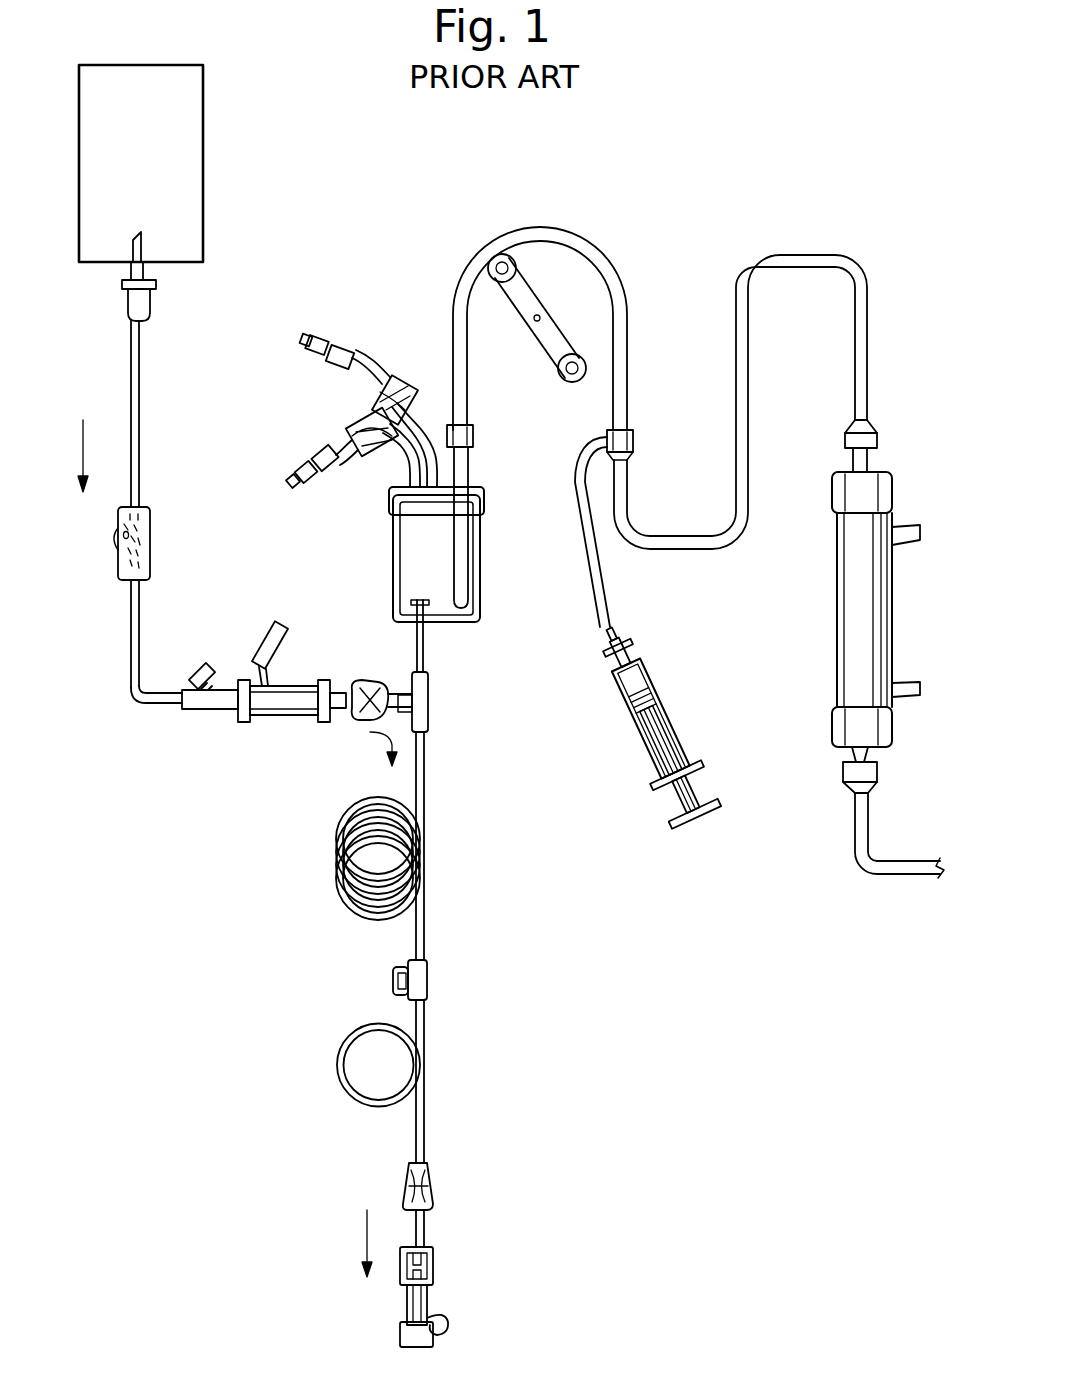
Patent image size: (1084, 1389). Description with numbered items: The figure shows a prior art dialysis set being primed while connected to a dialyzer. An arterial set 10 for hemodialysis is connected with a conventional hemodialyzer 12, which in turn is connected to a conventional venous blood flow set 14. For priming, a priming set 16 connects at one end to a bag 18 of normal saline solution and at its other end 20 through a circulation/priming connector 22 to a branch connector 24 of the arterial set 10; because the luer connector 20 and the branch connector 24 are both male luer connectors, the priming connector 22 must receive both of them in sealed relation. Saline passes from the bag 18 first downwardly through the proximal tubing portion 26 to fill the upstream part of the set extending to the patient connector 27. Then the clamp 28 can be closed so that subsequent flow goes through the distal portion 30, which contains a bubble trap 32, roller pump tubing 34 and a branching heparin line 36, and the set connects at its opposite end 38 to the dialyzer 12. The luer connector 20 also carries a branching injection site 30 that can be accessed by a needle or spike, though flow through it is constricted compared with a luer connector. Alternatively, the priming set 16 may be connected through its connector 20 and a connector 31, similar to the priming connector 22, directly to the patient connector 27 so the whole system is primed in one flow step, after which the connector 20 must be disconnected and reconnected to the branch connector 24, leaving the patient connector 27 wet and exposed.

The arterial set 10 is at (432, 931).
The hemodialyzer 12 is at (853, 618).
The venous blood flow set 14 is at (880, 876).
The priming set 16 is at (140, 612).
The bag of normal saline solution 18 is at (161, 161).
The luer connector 20 is at (198, 710).
The circulation/priming connector 22 is at (290, 728).
The branch connector 24 is at (332, 683).
The proximal tubing portion 26 is at (425, 1123).
The patient connector 27 is at (433, 1275).
The clamp 28 is at (433, 1197).
The distal portion / branching injection site 30 is at (198, 662).
The connector 31 is at (400, 1305).
The bubble trap 32 is at (482, 568).
The roller pump tubing 34 is at (607, 258).
The branching heparin line 36 is at (608, 600).
The opposite end 38 is at (845, 437).